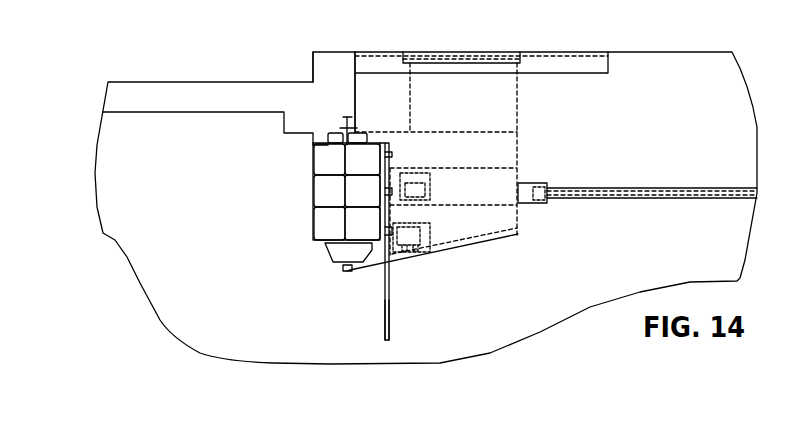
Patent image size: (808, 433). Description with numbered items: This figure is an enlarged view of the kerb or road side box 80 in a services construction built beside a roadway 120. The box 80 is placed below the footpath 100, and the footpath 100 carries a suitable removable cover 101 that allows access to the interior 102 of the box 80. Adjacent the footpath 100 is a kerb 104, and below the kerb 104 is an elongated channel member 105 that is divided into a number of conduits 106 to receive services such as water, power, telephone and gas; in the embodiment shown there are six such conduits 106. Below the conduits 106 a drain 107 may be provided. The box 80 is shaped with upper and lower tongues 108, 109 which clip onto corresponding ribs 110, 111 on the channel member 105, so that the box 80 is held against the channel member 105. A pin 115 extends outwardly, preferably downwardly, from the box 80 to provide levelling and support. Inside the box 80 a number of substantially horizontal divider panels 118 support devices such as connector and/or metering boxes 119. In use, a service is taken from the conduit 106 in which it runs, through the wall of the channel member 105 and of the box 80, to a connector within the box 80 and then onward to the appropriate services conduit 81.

The kerb or road side box 80 is at (418, 257).
The services conduit 81 is at (663, 200).
The footpath 100 is at (570, 65).
The removable cover 101 is at (483, 57).
The interior 102 is at (487, 102).
The kerb 104 is at (333, 68).
The channel member 105 is at (322, 220).
The conduits 106 is at (317, 190).
The drain 107 is at (330, 252).
The upper tongue 108 is at (377, 132).
The lower tongue 109 is at (347, 272).
The rib 110 is at (340, 117).
The rib 111 is at (343, 268).
The pin 115 is at (387, 337).
The divider panels 118 is at (480, 205).
The connector and/or metering boxes 119 is at (415, 192).
The roadway 120 is at (173, 93).